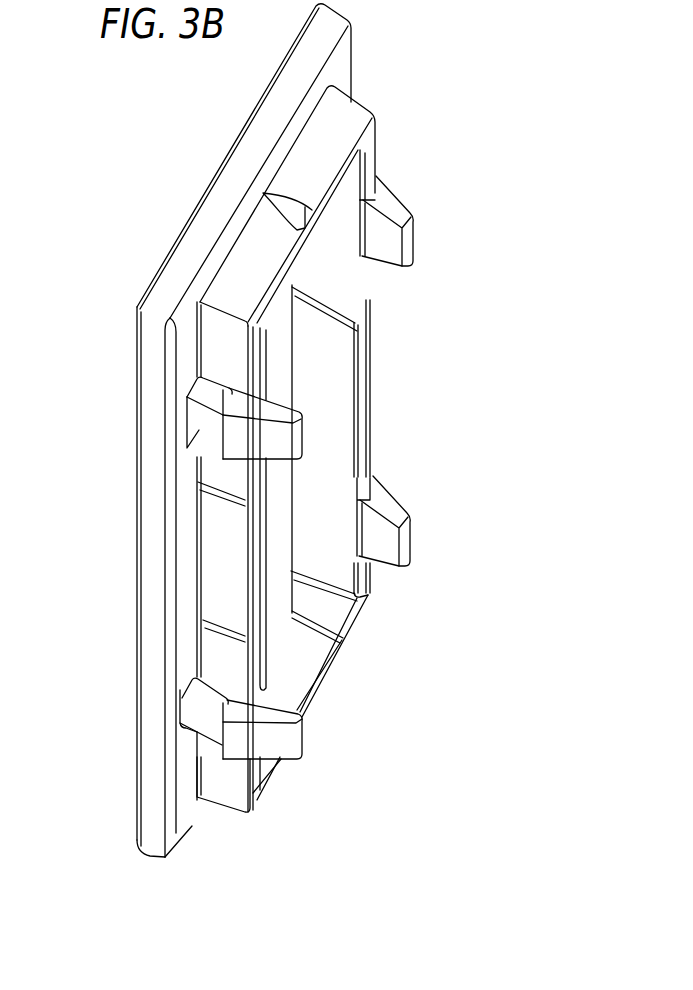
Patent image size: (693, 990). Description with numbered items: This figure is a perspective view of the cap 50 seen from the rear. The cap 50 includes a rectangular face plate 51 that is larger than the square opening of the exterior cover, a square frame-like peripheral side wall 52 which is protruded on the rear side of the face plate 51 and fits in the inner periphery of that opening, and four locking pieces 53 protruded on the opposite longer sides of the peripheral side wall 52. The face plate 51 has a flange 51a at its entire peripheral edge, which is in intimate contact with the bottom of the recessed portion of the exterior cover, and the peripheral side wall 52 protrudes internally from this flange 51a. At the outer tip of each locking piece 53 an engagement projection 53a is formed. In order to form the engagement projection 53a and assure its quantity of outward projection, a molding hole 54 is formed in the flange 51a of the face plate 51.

The cap 50 is at (121, 361).
The face plate 51 is at (136, 553).
The flange 51a is at (150, 664).
The peripheral side wall 52 is at (215, 564).
The locking piece 53 is at (303, 426).
The engagement projection 53a is at (233, 447).
The molding hole 54 is at (187, 410).